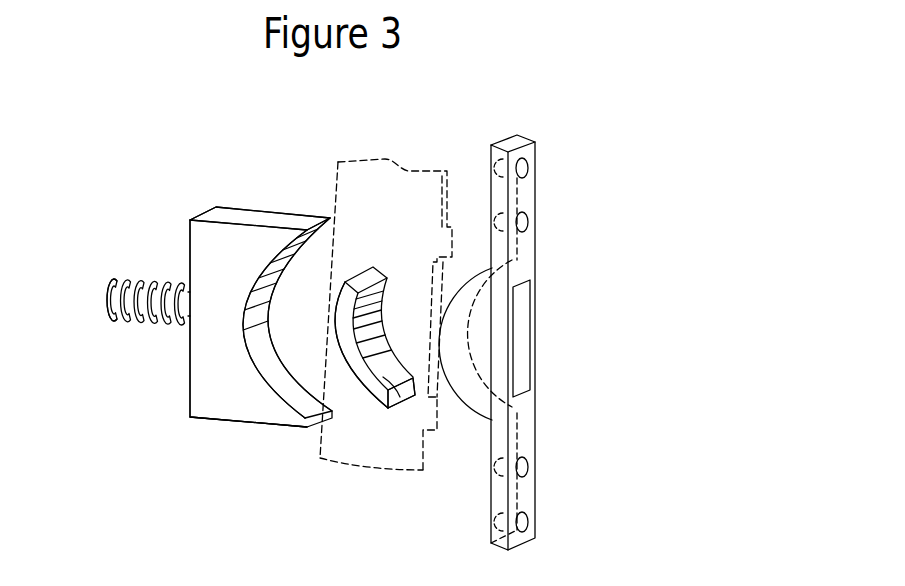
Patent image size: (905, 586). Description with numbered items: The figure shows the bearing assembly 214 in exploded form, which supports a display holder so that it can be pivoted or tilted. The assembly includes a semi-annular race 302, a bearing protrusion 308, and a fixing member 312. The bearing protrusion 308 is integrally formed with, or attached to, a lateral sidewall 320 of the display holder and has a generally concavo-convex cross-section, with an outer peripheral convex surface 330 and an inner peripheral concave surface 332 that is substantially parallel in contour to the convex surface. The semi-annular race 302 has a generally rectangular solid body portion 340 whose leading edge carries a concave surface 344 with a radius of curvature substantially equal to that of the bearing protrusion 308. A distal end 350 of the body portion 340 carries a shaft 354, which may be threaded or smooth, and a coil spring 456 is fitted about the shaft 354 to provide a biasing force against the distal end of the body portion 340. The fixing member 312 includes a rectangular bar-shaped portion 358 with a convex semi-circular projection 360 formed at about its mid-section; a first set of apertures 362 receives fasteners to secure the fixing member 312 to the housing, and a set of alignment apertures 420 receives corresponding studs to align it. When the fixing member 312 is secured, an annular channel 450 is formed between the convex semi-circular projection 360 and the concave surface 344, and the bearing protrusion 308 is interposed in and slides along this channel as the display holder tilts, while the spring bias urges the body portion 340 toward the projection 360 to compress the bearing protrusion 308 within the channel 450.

The bearing assembly 214 is at (228, 435).
The semi-annular race 302 is at (210, 393).
The bearing protrusion 308 is at (372, 392).
The fixing member 312 is at (530, 417).
The lateral sidewall 320 is at (395, 212).
The outer peripheral convex surface 330 is at (343, 383).
The inner peripheral concave surface 332 is at (385, 378).
The body portion 340 is at (223, 230).
The concave surface 344 is at (290, 396).
The distal end 350 is at (202, 242).
The shaft 354 is at (155, 280).
The bar-shaped portion 358 is at (523, 493).
The convex semi-circular projection 360 is at (477, 388).
The first set of apertures 362 is at (522, 227).
The alignment apertures 420 is at (522, 170).
The annular channel 450 is at (307, 258).
The coil spring 456 is at (145, 323).